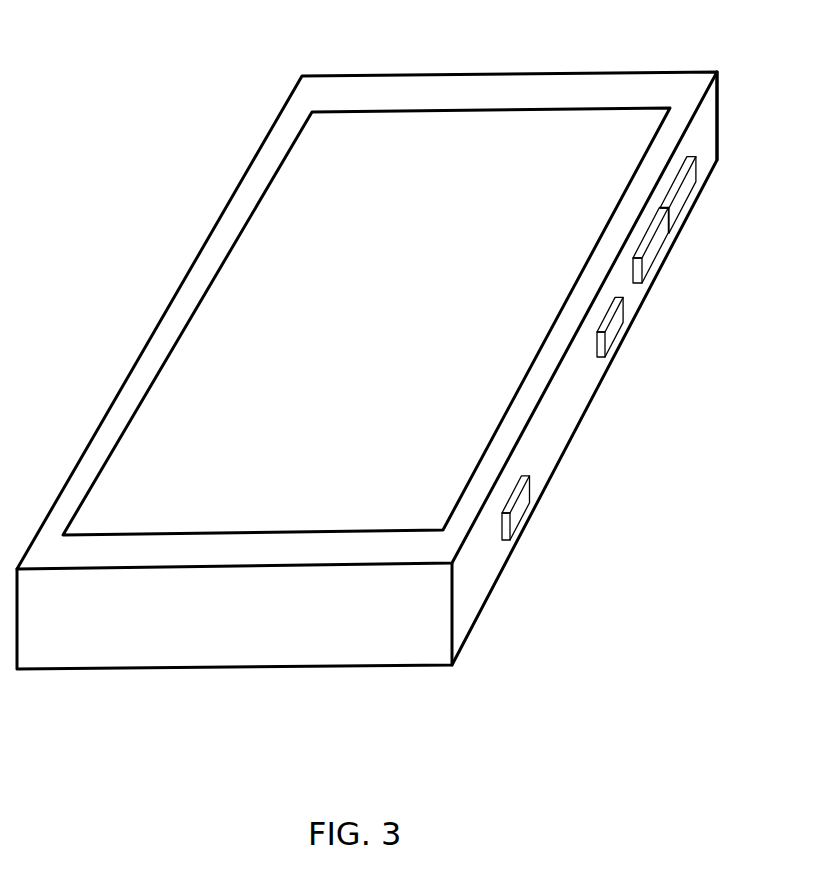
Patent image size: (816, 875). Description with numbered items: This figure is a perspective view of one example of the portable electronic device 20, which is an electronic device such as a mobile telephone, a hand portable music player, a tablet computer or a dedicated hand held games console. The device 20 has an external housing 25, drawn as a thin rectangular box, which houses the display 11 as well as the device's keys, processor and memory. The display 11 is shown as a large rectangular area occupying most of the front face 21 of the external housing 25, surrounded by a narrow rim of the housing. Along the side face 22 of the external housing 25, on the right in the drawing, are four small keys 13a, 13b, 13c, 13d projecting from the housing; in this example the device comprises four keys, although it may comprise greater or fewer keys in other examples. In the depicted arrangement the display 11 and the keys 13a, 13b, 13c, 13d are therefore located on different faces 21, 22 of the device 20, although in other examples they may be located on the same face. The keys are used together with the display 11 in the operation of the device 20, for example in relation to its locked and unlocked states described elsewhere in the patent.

The second apparatus 20 is at (397, 394).
The front face 21 is at (322, 92).
The display 11 is at (173, 342).
The side face 22 is at (470, 607).
The external housing 25 is at (671, 89).
The key 13a is at (527, 515).
The key 13b is at (620, 332).
The key 13c is at (667, 255).
The key 13d is at (692, 202).